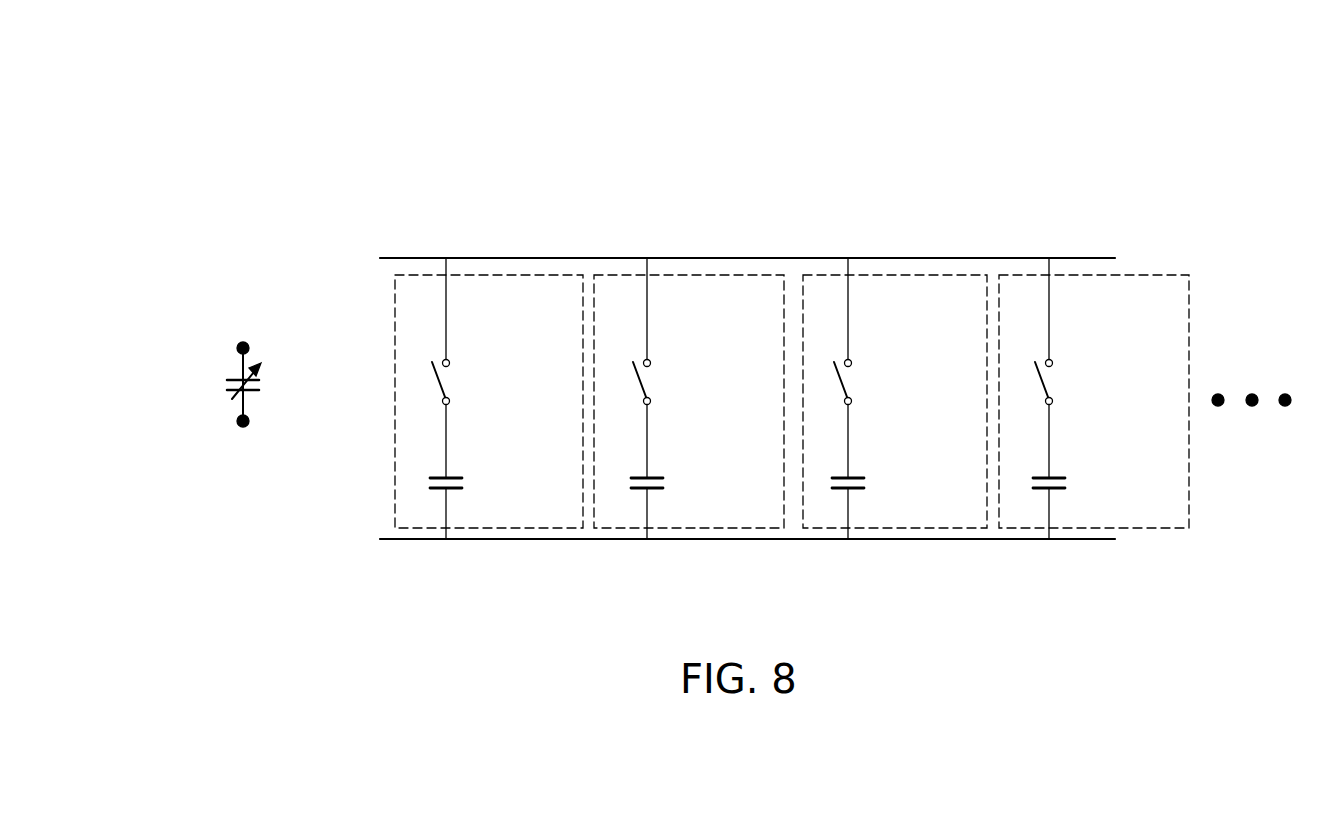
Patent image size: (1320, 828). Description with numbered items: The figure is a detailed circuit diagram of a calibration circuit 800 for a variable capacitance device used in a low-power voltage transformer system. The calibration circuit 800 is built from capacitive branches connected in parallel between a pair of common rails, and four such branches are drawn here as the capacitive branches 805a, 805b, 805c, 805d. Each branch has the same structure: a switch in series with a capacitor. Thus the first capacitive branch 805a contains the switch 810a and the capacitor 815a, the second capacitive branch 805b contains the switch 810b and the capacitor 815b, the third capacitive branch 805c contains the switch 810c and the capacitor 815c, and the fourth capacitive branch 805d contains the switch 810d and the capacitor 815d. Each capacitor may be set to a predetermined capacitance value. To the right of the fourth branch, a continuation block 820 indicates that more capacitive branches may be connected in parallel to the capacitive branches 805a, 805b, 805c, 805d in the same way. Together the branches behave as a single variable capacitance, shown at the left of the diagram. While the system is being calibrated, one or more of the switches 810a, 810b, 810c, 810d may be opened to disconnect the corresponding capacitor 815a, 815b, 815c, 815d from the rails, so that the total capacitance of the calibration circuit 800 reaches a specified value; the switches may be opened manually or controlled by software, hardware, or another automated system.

The calibration circuit 800 is at (202, 90).
The capacitive branch 805a is at (514, 274).
The capacitive branch 805b is at (713, 274).
The capacitive branch 805c is at (910, 274).
The capacitive branch 805d is at (1108, 274).
The switch 810a is at (432, 362).
The switch 810b is at (633, 362).
The switch 810c is at (834, 362).
The switch 810d is at (1035, 362).
The capacitor 815a is at (456, 490).
The capacitor 815b is at (657, 490).
The capacitor 815c is at (858, 490).
The capacitor 815d is at (1057, 490).
The continuation block 820 is at (1252, 394).